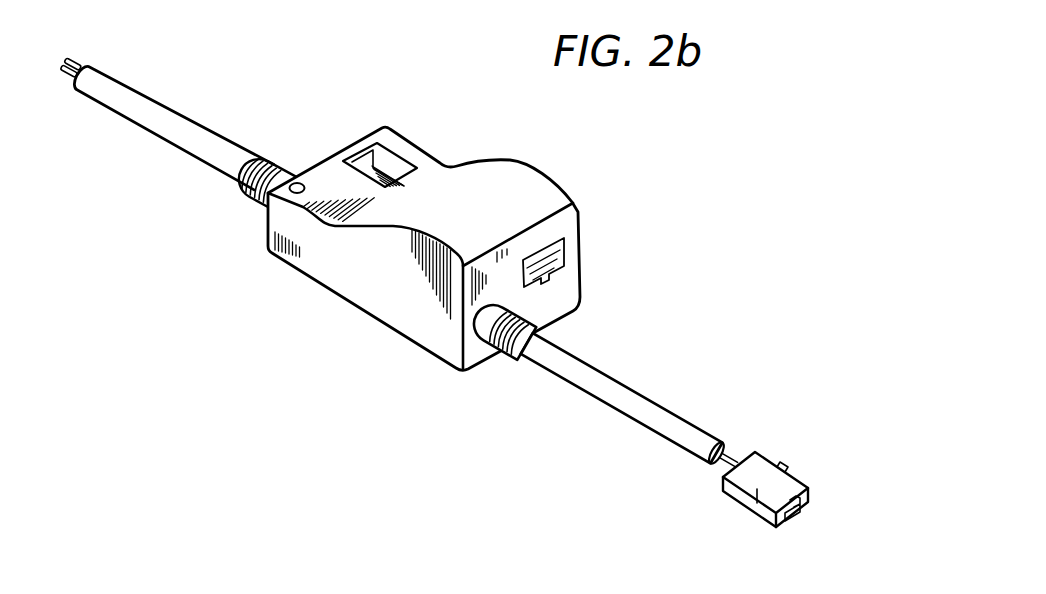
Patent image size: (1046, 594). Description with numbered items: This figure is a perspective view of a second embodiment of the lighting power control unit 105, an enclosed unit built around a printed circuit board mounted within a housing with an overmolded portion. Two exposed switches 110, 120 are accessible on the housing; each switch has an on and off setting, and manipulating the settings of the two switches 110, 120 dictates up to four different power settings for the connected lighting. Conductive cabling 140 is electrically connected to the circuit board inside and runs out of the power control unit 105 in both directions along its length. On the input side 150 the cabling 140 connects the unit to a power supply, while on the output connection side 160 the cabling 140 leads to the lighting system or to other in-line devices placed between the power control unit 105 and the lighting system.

The power control unit 105 is at (429, 290).
The switch 110 is at (372, 174).
The switch 120 is at (383, 174).
The conductive cabling 140 is at (153, 121).
The input side 150 is at (467, 250).
The output connection side 160 is at (296, 193).